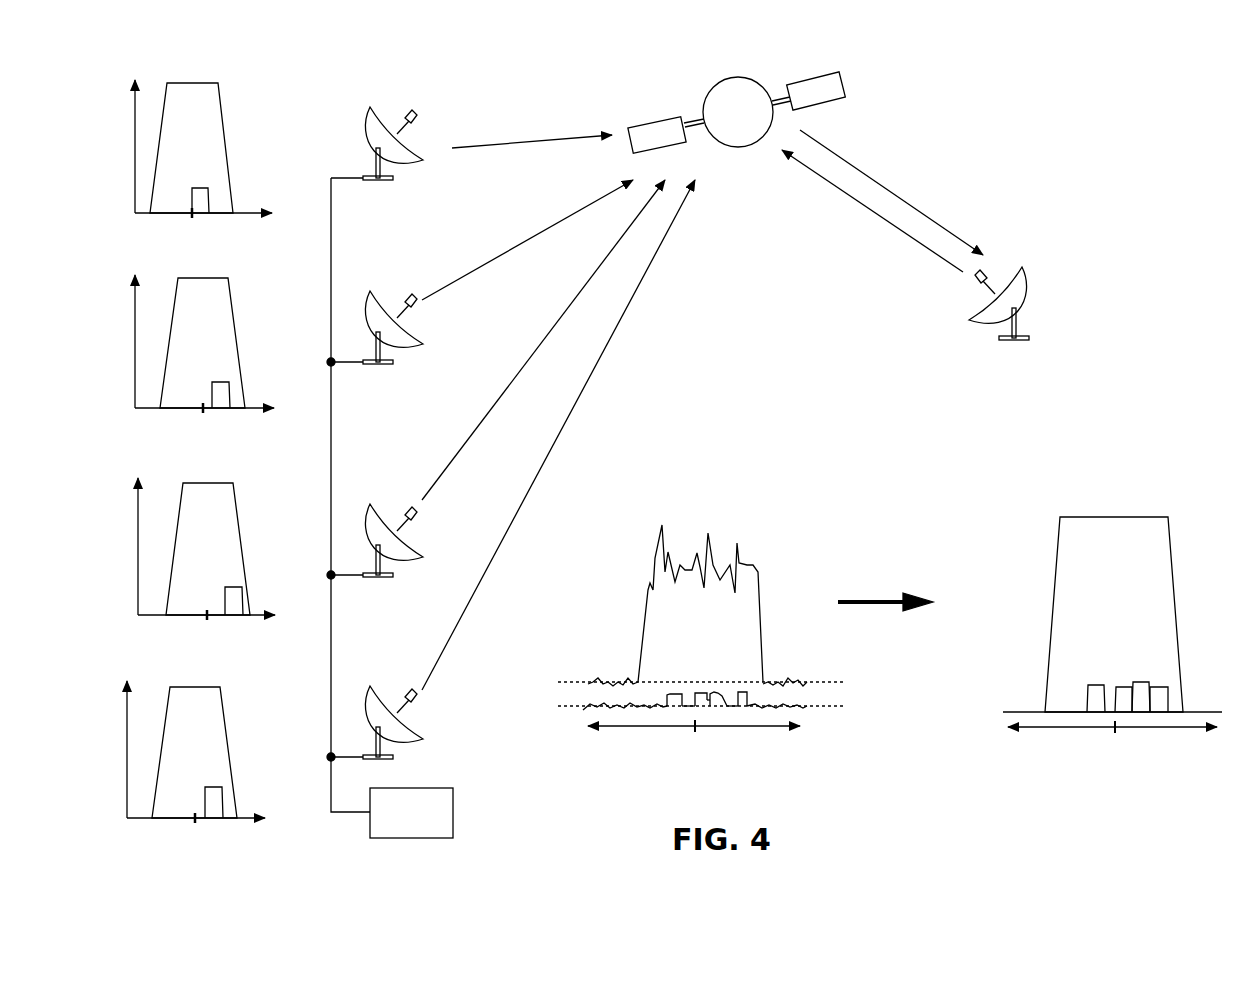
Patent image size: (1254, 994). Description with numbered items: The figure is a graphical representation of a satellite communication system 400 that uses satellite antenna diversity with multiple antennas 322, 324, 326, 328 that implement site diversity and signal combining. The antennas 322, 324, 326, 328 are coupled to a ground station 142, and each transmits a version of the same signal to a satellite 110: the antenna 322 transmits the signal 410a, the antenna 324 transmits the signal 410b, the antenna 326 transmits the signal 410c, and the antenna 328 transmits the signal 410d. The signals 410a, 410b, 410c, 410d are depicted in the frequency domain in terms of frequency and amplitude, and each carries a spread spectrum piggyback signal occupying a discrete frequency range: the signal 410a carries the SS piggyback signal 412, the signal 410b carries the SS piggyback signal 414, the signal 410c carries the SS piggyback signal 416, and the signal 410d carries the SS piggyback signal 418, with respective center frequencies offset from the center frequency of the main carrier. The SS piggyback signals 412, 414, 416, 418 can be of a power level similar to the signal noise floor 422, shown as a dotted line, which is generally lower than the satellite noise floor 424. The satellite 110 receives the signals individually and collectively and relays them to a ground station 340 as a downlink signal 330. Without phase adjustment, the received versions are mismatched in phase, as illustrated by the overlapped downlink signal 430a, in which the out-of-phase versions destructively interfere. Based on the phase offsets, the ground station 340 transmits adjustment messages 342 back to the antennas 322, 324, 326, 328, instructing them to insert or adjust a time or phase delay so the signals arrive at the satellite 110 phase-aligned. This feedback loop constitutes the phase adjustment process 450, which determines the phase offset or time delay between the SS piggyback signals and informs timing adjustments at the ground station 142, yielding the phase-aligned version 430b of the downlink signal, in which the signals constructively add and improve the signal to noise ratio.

The satellite communication system 400 is at (444, 55).
The satellite 110 is at (728, 92).
The antenna 322 is at (408, 148).
The antenna 324 is at (393, 333).
The antenna 326 is at (410, 540).
The antenna 328 is at (410, 722).
The downlink signal 330 is at (908, 202).
The adjustment messages 342 is at (897, 226).
The ground station 340 is at (1025, 282).
The ground station 142 is at (450, 817).
The signal 410a is at (172, 84).
The signal 410b is at (197, 279).
The signal 410c is at (190, 484).
The signal 410d is at (196, 688).
The SS piggyback signal 412 is at (205, 200).
The SS piggyback signal 414 is at (224, 395).
The SS piggyback signal 416 is at (238, 600).
The SS piggyback signal 418 is at (216, 800).
The downlink signal 430a is at (667, 568).
The phase-aligned version of the downlink signal 430b is at (1062, 560).
The satellite noise floor 424 is at (580, 683).
The signal noise floor 422 is at (845, 706).
The phase adjustment process 450 is at (858, 600).